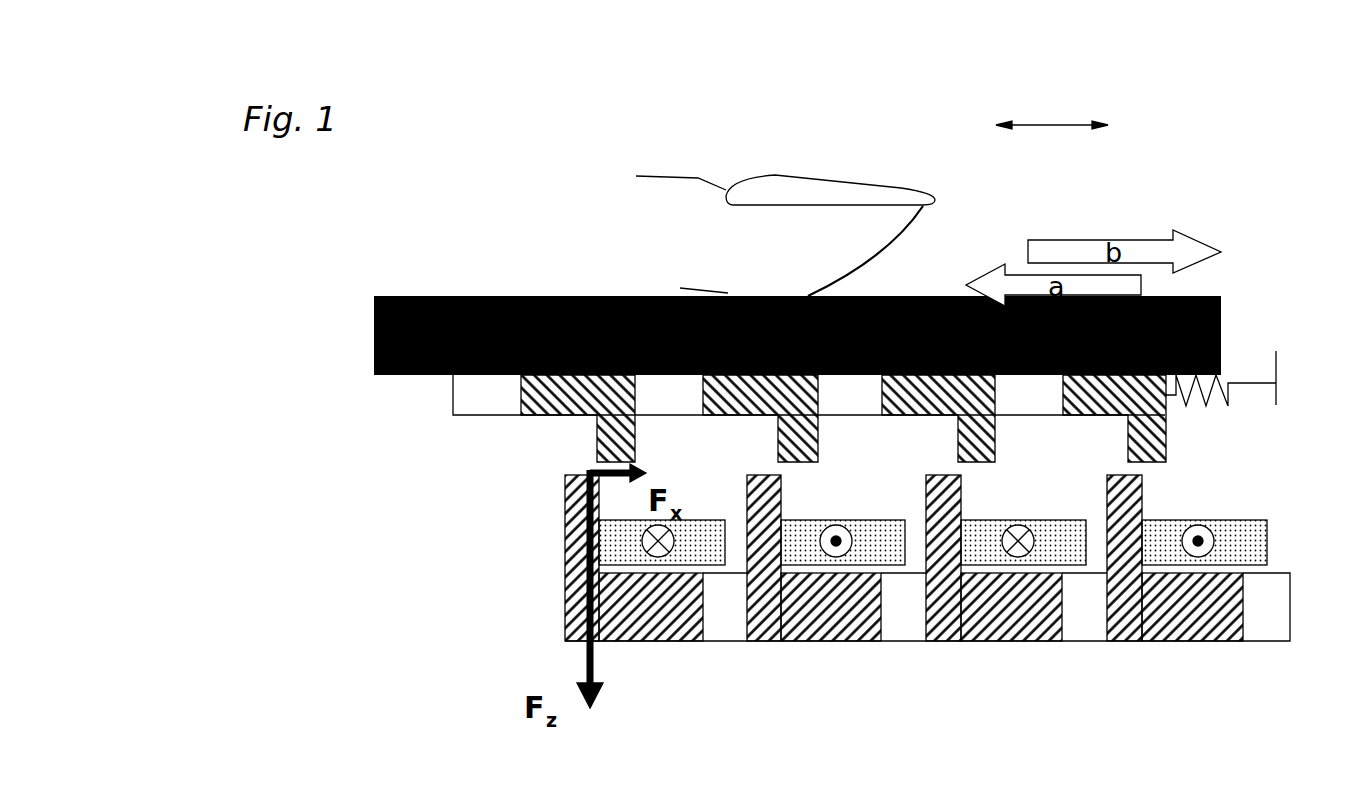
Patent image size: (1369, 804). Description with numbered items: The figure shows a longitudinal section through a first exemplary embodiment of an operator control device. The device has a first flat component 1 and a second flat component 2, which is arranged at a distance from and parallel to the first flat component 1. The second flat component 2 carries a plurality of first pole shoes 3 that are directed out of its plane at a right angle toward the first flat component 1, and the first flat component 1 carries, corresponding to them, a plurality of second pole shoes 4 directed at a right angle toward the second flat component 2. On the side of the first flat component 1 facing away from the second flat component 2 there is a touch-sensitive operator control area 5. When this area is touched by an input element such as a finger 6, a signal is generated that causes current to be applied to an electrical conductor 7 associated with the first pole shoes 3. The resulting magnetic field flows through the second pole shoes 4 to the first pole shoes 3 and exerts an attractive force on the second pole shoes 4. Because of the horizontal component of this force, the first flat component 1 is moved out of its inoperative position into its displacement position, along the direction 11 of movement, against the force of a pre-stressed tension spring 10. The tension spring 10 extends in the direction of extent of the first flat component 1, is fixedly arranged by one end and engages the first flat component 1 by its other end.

The first flat component 1 is at (463, 384).
The second flat component 2 is at (1213, 618).
The first pole shoes 3 is at (557, 492).
The second pole shoes 4 is at (589, 433).
The touch-sensitive operator control area 5 is at (505, 288).
The finger 6 is at (848, 165).
The electrical conductor 7 is at (1240, 537).
The tension spring 10 is at (1213, 398).
The direction of movement 11 is at (1037, 118).